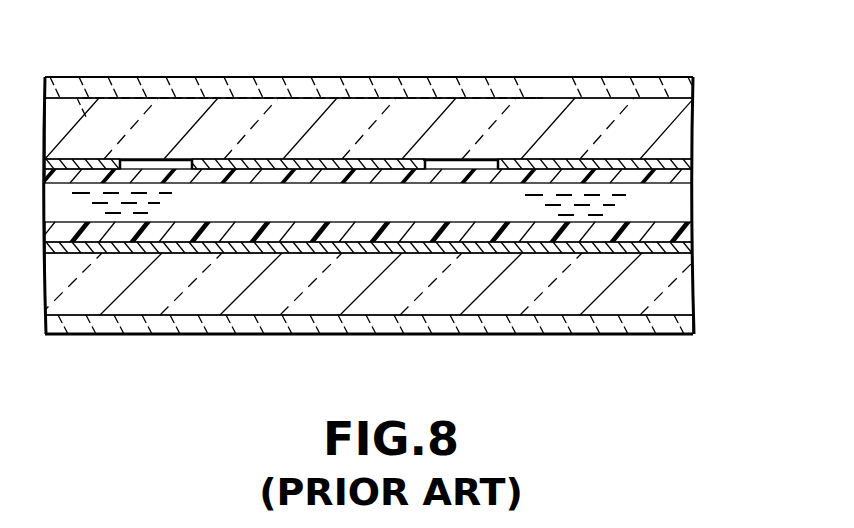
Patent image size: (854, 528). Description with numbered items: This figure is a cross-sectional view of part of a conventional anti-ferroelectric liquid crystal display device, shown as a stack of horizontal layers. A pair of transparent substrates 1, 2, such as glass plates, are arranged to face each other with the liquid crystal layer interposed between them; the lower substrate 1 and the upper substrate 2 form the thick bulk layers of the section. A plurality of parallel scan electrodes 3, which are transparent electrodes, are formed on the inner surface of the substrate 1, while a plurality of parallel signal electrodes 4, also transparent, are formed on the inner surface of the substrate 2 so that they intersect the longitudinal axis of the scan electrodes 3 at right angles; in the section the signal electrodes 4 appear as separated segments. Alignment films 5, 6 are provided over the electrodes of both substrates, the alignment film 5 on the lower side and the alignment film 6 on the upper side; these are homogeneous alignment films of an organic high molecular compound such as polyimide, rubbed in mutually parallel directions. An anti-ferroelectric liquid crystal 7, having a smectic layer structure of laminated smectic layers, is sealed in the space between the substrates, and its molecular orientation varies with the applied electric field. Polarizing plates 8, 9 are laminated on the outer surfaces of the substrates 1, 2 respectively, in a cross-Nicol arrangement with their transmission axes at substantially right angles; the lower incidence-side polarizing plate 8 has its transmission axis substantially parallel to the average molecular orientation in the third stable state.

The transparent substrate 1 is at (696, 300).
The transparent substrate 2 is at (693, 143).
The scan electrodes 3 is at (353, 250).
The signal electrodes 4 is at (90, 165).
The alignment film 5 is at (467, 240).
The alignment film 6 is at (453, 173).
The anti-ferroelectric liquid crystal 7 is at (177, 210).
The polarizing plate 8 is at (655, 328).
The polarizing plate 9 is at (669, 92).